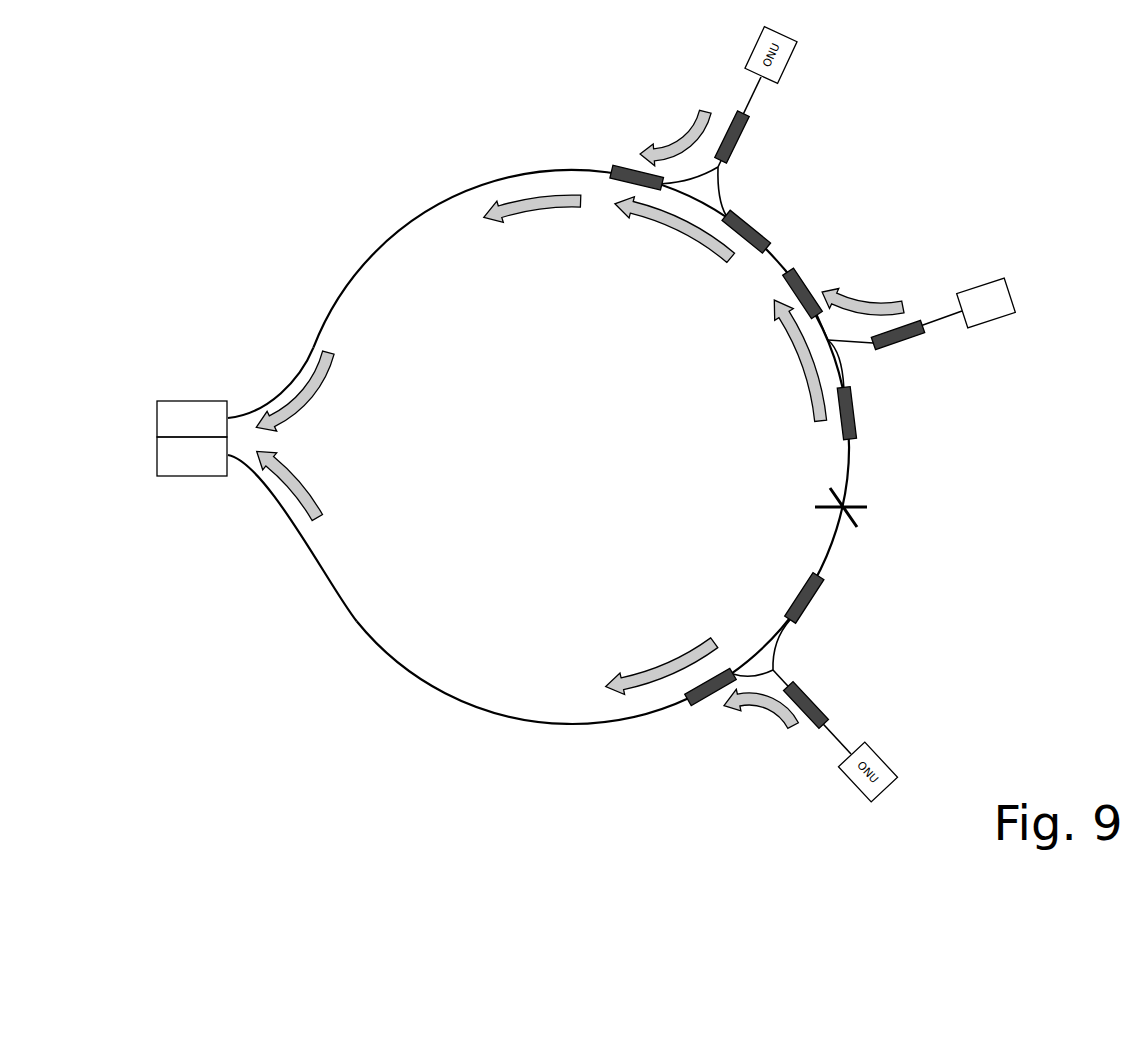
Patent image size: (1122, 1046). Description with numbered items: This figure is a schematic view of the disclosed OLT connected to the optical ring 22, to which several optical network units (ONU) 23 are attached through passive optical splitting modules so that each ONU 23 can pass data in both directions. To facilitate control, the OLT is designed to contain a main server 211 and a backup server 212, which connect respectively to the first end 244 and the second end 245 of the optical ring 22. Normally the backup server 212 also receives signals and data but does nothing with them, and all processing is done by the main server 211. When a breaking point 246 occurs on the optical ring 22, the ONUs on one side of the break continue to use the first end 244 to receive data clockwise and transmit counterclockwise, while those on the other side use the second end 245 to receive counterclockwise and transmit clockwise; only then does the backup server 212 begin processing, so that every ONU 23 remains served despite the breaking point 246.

The optical ring 22 is at (587, 727).
The optical network unit (ONU) 23 is at (1009, 279).
The main server 211 is at (166, 402).
The backup server 212 is at (177, 472).
The first end of the optical ring 244 is at (233, 404).
The second end of the optical ring 245 is at (236, 472).
The breaking point 246 is at (887, 527).